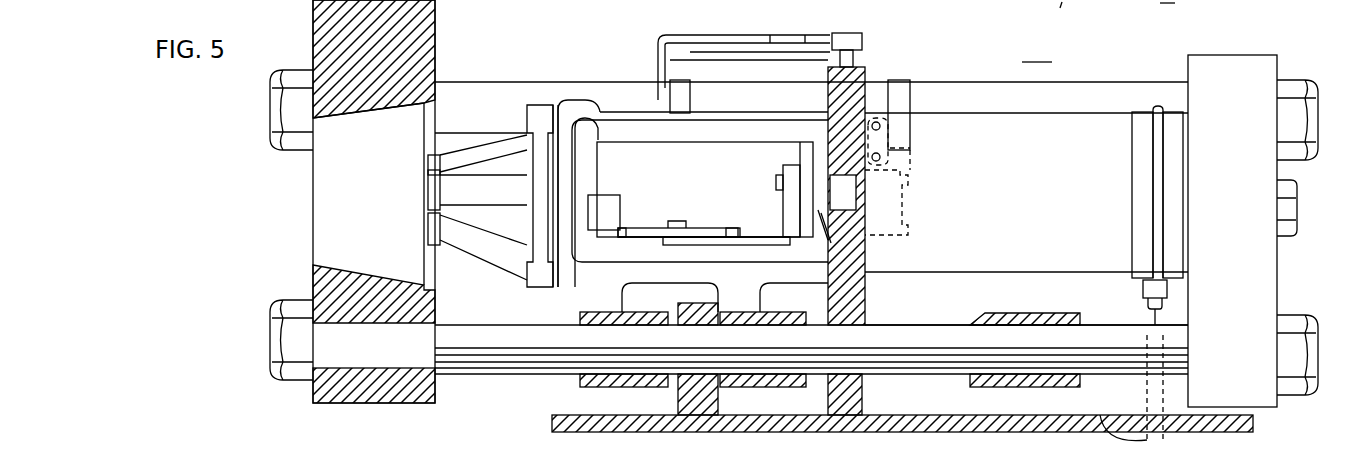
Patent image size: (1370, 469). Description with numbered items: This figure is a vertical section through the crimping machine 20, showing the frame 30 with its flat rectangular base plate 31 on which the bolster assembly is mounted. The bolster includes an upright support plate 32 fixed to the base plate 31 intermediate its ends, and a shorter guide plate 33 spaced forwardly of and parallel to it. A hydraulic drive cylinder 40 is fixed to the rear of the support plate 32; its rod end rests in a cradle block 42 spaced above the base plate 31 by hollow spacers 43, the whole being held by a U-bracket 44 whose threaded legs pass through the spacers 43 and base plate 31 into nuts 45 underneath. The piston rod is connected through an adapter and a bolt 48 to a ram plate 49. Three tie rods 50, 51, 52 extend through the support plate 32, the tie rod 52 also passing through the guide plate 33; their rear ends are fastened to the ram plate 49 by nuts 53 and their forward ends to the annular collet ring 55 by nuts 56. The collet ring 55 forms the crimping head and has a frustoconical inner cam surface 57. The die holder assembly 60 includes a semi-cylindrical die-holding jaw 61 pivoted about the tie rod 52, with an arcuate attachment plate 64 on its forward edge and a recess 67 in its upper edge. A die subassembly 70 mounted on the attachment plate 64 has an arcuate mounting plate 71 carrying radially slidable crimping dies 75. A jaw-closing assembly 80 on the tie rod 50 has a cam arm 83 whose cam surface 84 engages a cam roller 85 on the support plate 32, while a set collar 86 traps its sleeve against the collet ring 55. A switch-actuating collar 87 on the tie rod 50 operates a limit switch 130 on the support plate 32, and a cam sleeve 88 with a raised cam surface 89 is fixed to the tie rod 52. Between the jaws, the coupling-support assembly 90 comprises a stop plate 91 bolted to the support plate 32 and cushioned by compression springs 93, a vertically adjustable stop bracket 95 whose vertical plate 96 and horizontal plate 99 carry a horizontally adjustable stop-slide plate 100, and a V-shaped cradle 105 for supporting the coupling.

The crimping machine 20 is at (1036, 47).
The frame 30 is at (1184, 9).
The base plate 31 is at (552, 418).
The support plate 32 is at (855, 305).
The guide plate 33 is at (680, 395).
The hydraulic drive cylinder 40 is at (1072, 125).
The cradle block 42 is at (1152, 290).
The hollow spacers 43 is at (1150, 400).
The U-bracket 44 is at (1155, 170).
The nuts 45 is at (1102, 432).
The bolt 48 is at (1290, 228).
The ram plate 49 is at (1232, 68).
The tie rod 50 is at (978, 95).
The tie rod 51 is at (1055, 6).
The tie rod 52 is at (898, 368).
The nuts 53 is at (1302, 92).
The collet ring 55 is at (325, 28).
The nuts 56 is at (285, 118).
The inner cam surface 57 is at (365, 118).
The die holder assembly 60 is at (622, 115).
The die-holding jaw 61 is at (590, 135).
The attachment plate 64 is at (555, 108).
The cutout or recess 67 is at (740, 135).
The die subassembly 70 is at (489, 120).
The mounting plate 71 is at (527, 125).
The crimping dies 75 is at (435, 228).
The jaw-closing assembly 80 is at (638, 80).
The cam arm 83 is at (705, 38).
The cam surface 84 is at (792, 38).
The cam roller 85 is at (852, 42).
The set collar 86 is at (684, 100).
The switch-actuating collar 87 is at (902, 85).
The cam sleeve 88 is at (990, 312).
The raised cam surface 89 is at (1043, 314).
The coupling-support assembly 90 is at (672, 205).
The stop plate 91 is at (805, 155).
The compression springs 93 is at (845, 245).
The stop bracket 95 is at (775, 274).
The vertical plate 96 is at (790, 215).
The horizontal plate 99 is at (690, 245).
The stop-slide plate 100 is at (730, 210).
The V-shaped seat or cradle 105 is at (595, 210).
The limit switch 130 is at (905, 198).